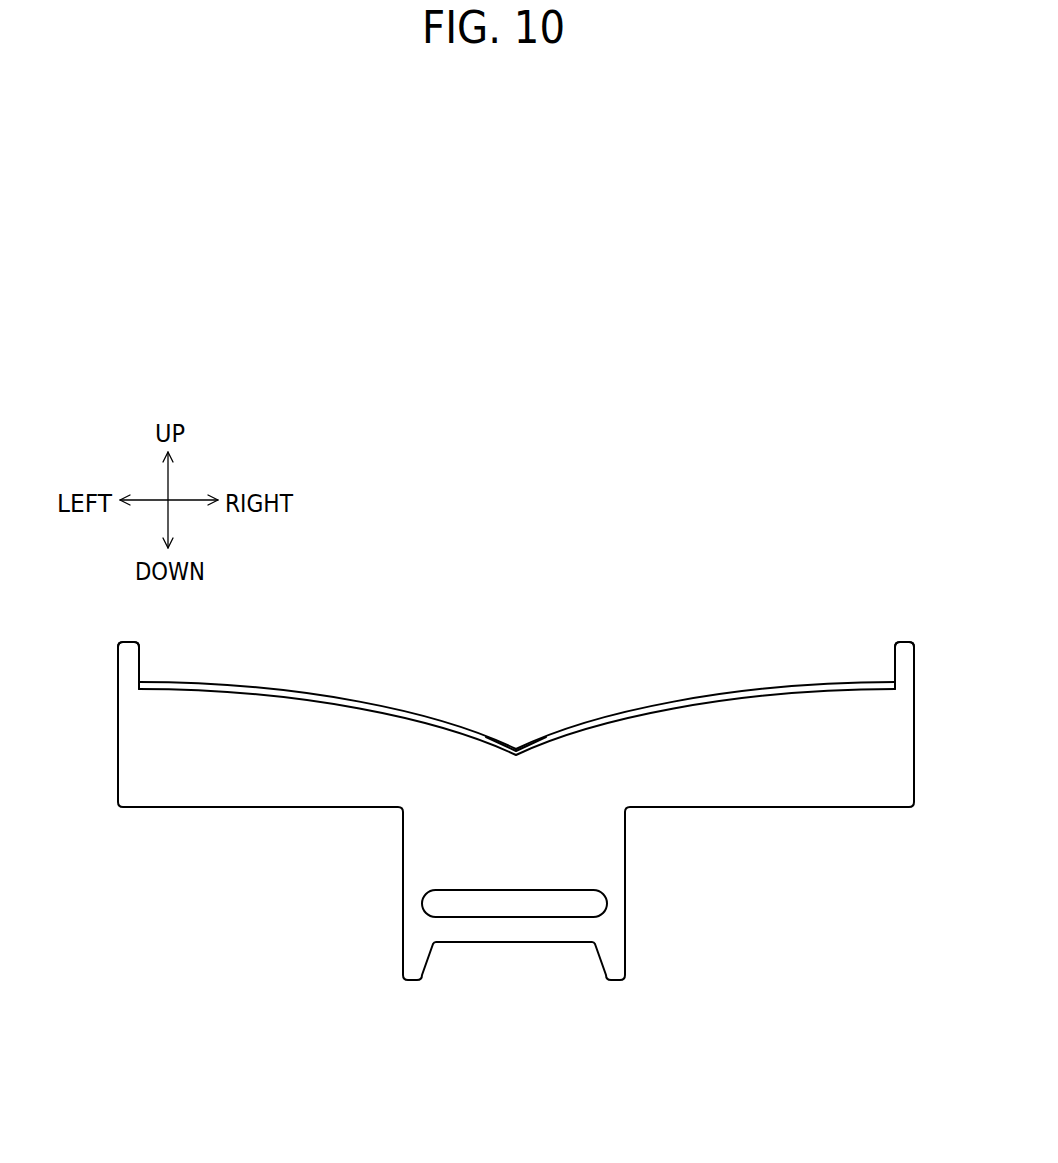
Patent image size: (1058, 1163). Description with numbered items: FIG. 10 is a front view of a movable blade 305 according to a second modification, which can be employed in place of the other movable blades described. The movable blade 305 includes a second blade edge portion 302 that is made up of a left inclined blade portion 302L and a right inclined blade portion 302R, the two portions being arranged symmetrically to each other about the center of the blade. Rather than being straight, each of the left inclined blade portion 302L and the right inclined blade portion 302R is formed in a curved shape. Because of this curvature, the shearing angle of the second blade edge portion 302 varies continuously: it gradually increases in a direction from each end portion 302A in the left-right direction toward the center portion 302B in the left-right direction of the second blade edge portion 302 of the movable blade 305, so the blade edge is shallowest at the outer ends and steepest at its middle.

The second blade edge portion 302 is at (517, 594).
The left inclined blade portion 302L is at (450, 730).
The right inclined blade portion 302R is at (600, 718).
The center portion 302B is at (508, 703).
The end portion 302A is at (230, 678).
The movable blade 305 is at (742, 545).